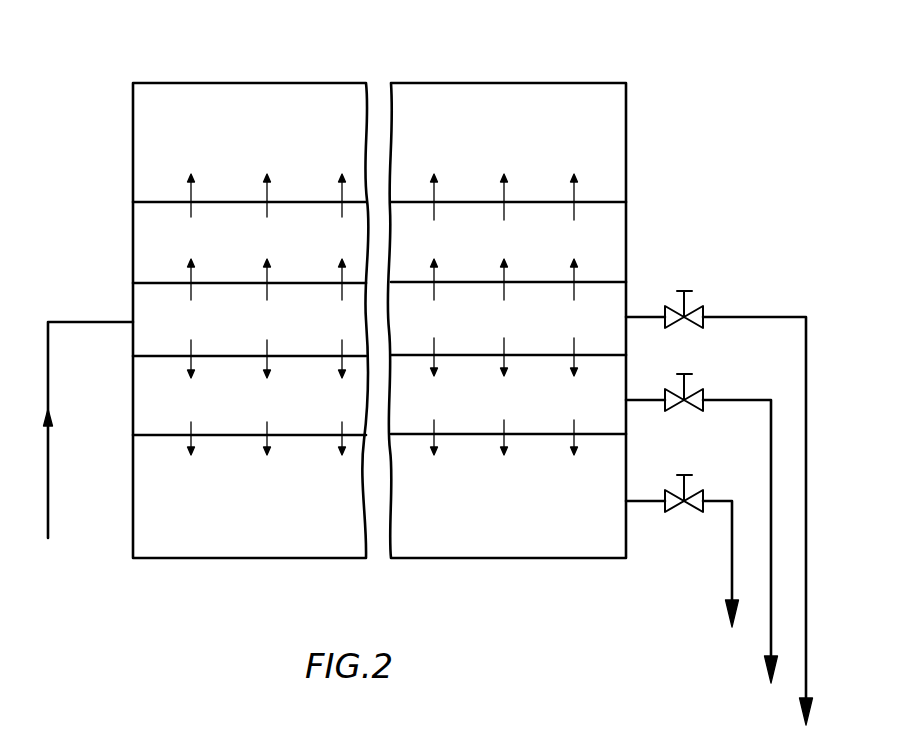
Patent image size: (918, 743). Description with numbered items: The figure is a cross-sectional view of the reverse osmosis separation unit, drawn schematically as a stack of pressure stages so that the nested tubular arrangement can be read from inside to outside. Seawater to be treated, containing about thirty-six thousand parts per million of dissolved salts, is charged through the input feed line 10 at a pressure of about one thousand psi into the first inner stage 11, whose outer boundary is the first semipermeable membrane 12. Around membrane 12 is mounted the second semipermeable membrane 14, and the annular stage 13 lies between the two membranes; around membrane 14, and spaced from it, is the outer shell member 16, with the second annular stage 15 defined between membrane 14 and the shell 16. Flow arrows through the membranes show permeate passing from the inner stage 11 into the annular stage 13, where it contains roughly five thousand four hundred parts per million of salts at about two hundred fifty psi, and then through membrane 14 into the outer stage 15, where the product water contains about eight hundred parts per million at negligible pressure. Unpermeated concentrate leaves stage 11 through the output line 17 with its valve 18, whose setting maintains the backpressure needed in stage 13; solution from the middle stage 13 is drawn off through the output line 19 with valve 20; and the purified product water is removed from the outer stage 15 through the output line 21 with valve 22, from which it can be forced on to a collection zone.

The input feed line 10 is at (49, 473).
The first inner stage 11 is at (506, 330).
The first semipermeable membrane 12 is at (550, 283).
The annular stage 13 is at (510, 252).
The second semipermeable membrane 14 is at (543, 200).
The second annular stage 15 is at (512, 142).
The outer shell member 16 is at (463, 82).
The output line 17 is at (652, 316).
The valve 18 is at (693, 308).
The output line 19 is at (652, 399).
The valve 20 is at (693, 392).
The output line 21 is at (652, 500).
The valve 22 is at (693, 493).